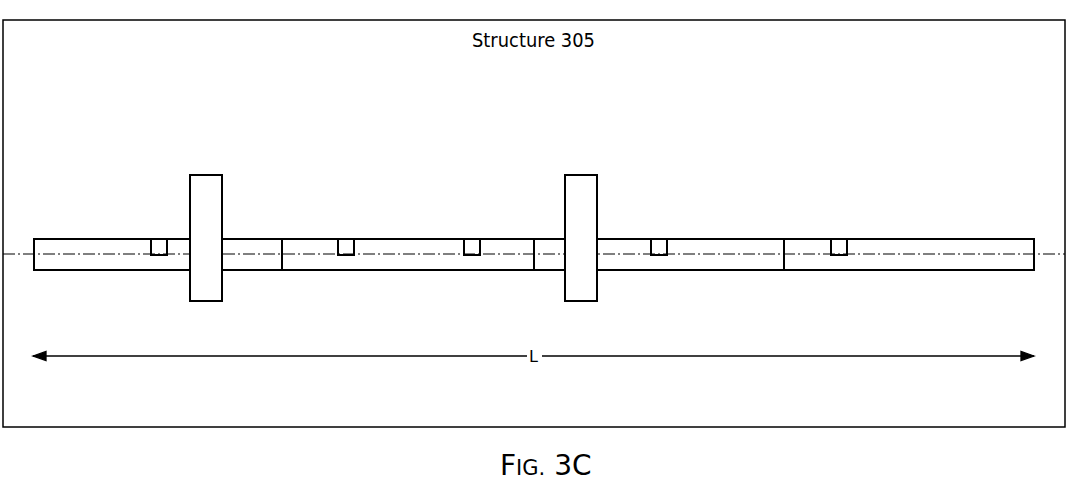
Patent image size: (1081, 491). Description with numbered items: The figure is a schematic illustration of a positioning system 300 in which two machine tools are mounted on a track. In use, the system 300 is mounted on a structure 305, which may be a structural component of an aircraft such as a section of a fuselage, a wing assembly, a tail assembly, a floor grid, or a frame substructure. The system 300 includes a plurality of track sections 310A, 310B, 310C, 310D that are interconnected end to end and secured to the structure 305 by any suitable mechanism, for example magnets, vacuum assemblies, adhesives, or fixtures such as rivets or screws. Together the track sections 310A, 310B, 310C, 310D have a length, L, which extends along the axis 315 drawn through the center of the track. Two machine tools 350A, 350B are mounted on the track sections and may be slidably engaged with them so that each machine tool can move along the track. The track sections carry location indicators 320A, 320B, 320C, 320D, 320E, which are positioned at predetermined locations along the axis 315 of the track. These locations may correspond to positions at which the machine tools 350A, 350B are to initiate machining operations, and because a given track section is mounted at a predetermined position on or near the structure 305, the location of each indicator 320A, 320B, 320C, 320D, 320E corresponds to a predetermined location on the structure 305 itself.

The system 300 is at (893, 192).
The structure 305 is at (534, 234).
The track section 310A is at (160, 270).
The track section 310B is at (410, 270).
The track section 310C is at (658, 270).
The track section 310D is at (910, 270).
The axis 315 is at (1003, 254).
The location indicator 320A is at (158, 237).
The location indicator 320B is at (345, 237).
The location indicator 320C is at (470, 237).
The location indicator 320D is at (655, 237).
The location indicator 320E is at (840, 237).
The machine tool 350A is at (207, 175).
The machine tool 350B is at (583, 175).